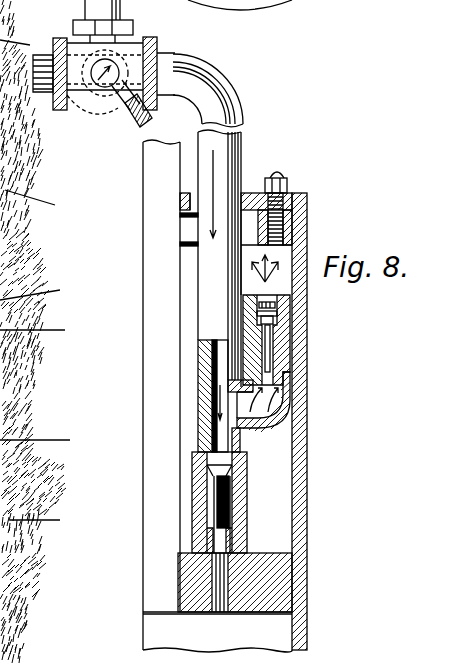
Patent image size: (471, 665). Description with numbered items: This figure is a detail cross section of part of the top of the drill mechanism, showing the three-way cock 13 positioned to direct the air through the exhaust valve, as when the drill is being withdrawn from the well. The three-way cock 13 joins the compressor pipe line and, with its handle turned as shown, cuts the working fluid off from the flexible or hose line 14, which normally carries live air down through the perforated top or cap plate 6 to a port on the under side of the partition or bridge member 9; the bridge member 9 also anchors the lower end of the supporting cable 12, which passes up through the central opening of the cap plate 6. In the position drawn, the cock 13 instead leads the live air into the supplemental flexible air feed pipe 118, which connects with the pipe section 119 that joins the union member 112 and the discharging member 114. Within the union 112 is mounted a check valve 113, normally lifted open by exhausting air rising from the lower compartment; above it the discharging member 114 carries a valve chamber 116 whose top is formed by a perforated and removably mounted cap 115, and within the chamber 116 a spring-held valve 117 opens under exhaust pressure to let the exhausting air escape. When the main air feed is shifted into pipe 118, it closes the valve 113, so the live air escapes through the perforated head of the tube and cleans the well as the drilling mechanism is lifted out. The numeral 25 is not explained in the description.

The perforated top or cap plate 6 is at (299, 198).
The partition or bridge member 9 is at (263, 570).
The supporting cable 12 is at (35, 331).
The three-way cock 13 is at (133, 43).
The flexible or hose line 14 is at (170, 62).
The ground 25 is at (11, 645).
The union member 112 is at (247, 498).
The check valve 113 is at (247, 471).
The discharging member 114 is at (253, 420).
The perforated and removably mounted cap 115 is at (284, 298).
The valve chamber 116 is at (290, 352).
The valve 117 is at (290, 323).
The supplemental flexible air feed pipe 118 is at (206, 76).
The pipe section 119 is at (205, 300).